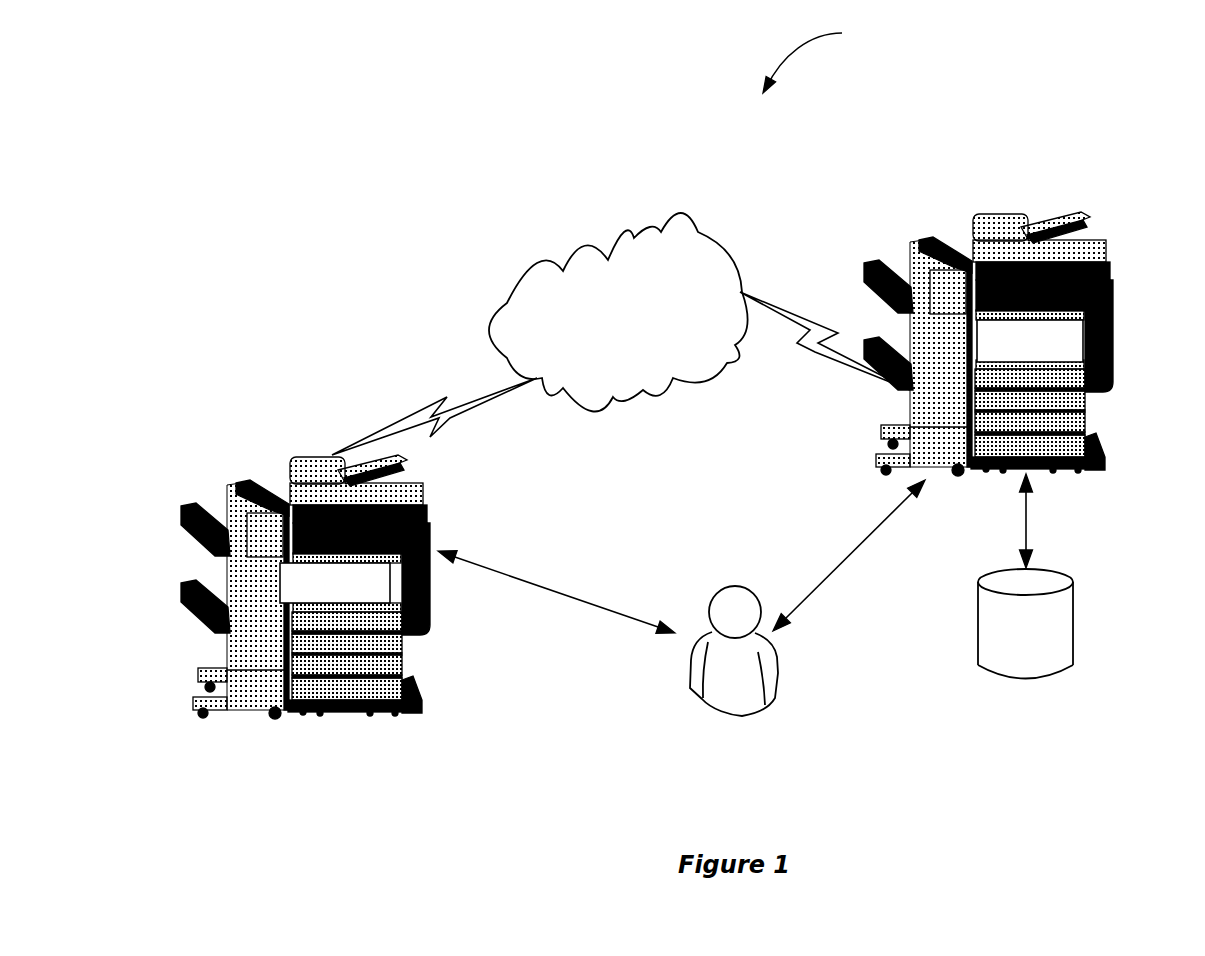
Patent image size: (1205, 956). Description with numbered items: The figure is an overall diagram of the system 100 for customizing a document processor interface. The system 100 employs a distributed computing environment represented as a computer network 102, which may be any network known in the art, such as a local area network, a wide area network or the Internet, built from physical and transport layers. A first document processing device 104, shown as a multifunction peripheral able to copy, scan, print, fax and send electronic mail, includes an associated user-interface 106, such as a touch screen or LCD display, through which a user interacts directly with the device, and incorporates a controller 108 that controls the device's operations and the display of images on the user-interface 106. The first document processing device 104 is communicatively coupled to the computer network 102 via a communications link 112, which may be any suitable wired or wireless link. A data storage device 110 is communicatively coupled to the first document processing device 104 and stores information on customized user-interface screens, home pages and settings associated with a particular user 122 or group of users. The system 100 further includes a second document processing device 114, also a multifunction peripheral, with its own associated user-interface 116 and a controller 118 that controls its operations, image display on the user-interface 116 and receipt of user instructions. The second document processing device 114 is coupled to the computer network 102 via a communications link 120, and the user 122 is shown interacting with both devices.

The system 100 is at (890, 42).
The computer network 102 is at (685, 213).
The first document processing device 104 is at (1010, 213).
The user-interface 106 is at (1107, 262).
The controller 108 is at (1117, 318).
The data storage device 110 is at (1067, 578).
The communications link 112 is at (815, 352).
The second document processing device 114 is at (298, 472).
The user-interface 116 is at (418, 508).
The controller 118 is at (418, 626).
The communications link 120 is at (430, 401).
The user 122 is at (722, 585).